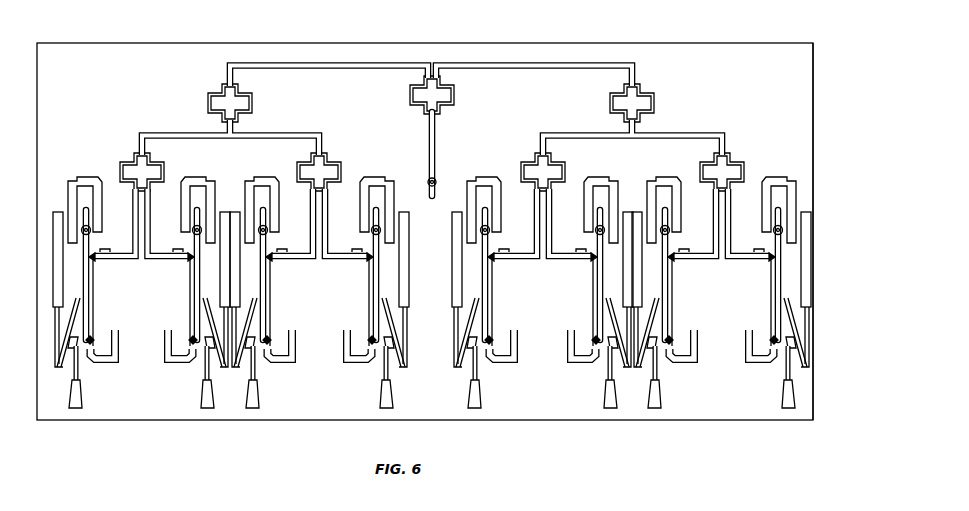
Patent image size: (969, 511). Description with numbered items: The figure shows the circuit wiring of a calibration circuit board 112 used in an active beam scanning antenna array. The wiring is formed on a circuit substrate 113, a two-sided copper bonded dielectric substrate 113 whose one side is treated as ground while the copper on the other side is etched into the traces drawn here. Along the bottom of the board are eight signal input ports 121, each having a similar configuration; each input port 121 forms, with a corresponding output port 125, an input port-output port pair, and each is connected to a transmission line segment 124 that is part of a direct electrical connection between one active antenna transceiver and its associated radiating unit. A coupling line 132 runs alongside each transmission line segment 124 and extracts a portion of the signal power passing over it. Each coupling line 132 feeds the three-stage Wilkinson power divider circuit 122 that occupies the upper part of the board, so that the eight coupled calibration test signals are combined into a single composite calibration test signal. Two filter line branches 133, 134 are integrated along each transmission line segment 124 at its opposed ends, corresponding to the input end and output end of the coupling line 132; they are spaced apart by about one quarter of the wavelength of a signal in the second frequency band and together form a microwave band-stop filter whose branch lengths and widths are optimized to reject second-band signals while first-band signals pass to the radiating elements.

The calibration circuit board 112 is at (70, 64).
The circuit substrate 113 is at (811, 102).
The signal input port 121 is at (432, 382).
The 3-stage Wilkinson power divider circuit 122 is at (676, 97).
The transmission line segment 124 is at (66, 368).
The output port 125 is at (193, 232).
The coupling line 132 is at (94, 298).
The filter line branch 133 is at (55, 212).
The filter line branch 134 is at (88, 178).